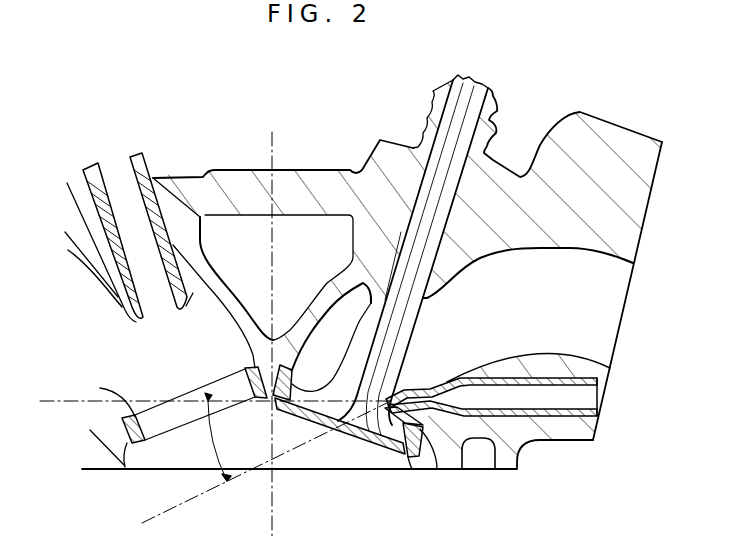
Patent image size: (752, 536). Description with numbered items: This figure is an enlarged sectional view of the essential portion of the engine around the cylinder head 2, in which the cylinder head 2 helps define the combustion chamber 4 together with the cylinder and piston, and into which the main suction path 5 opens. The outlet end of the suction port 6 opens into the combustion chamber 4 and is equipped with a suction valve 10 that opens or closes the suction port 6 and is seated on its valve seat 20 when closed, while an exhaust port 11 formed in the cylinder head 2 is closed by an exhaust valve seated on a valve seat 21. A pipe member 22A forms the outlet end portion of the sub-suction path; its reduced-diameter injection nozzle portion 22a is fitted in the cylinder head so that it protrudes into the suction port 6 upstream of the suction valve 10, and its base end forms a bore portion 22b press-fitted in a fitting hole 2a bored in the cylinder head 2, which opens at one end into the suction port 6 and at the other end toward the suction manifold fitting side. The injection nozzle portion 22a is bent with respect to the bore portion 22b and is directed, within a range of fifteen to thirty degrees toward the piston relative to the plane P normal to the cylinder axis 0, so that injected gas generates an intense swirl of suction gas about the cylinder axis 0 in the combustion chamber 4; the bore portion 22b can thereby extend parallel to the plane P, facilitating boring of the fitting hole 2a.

The cylinder head 2 is at (620, 140).
The fitting hole 2a is at (518, 410).
The combustion chamber 4 is at (365, 462).
The main suction path 5 is at (555, 301).
The suction port 6 is at (617, 300).
The suction valve 10 is at (403, 461).
The exhaust port 11 is at (123, 357).
The valve seat 20 is at (435, 463).
The valve seat 21 is at (139, 445).
The injection nozzle portion 22a is at (400, 392).
The bore portion 22b is at (521, 380).
The pipe member 22A is at (559, 418).
The axis of the cylinder 0 is at (276, 141).
The plane normal to the cylinder axis P is at (40, 403).